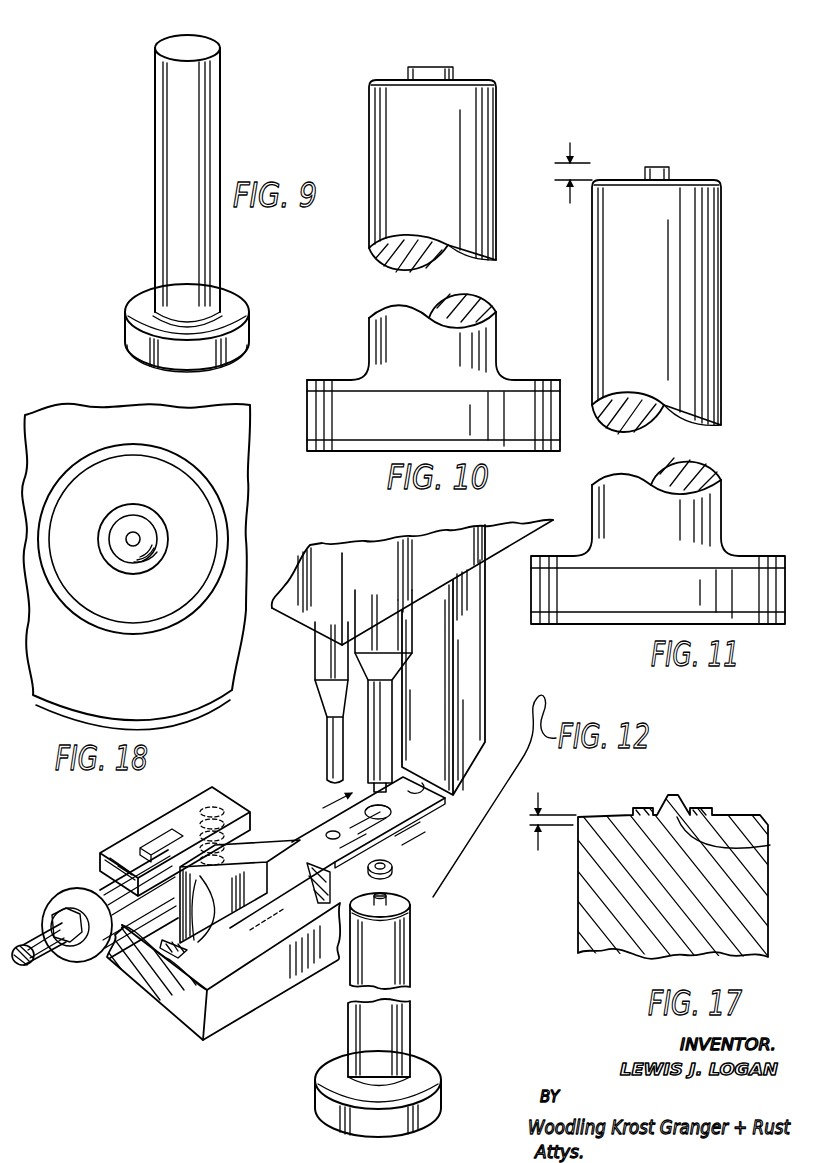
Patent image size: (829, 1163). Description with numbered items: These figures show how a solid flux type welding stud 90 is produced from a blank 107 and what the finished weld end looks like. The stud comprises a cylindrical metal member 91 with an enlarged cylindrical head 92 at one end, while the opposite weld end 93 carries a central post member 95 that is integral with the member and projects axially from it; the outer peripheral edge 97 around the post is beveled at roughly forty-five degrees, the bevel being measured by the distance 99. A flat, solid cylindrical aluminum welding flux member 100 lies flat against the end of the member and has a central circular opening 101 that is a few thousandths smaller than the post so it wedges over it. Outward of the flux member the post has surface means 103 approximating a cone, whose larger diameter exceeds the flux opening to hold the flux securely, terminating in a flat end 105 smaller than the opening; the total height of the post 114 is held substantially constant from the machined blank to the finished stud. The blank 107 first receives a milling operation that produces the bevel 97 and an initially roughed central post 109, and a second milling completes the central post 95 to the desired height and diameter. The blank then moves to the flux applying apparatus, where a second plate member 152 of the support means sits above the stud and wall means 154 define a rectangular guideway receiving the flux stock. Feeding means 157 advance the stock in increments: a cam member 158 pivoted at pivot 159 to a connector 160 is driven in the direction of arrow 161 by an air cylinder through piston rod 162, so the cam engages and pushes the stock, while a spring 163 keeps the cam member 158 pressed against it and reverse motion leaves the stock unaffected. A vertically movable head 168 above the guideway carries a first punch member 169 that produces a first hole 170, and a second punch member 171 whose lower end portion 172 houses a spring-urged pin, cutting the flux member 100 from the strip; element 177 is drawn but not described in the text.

In FIG. 17, the solid flux type welding stud 90 is at (602, 879).
In FIG. 17, the cylindrical metal member 91 is at (578, 862).
In FIG. 11, the enlarged cylindrical head 92 is at (608, 606).
In FIG. 17, the weld end 93 is at (748, 815).
In FIG. 11, the central post member 95 is at (669, 170).
In FIG. 12, the central post member 95 is at (390, 898).
In FIG. 17, the central post member 95 is at (770, 845).
In FIG. 10, the outer peripheral edge bevel 97 is at (375, 82).
In FIG. 11, the outer peripheral edge bevel 97 is at (722, 185).
In FIG. 18, the outer peripheral edge bevel 97 is at (128, 632).
In FIG. 12, the outer peripheral edge bevel 97 is at (410, 920).
In FIG. 17, the outer peripheral edge bevel 97 is at (584, 815).
In FIG. 17, the bevel dimension 99 is at (540, 820).
In FIG. 18, the welding flux member 100 is at (125, 504).
In FIG. 12, the welding flux member 100 is at (392, 870).
In FIG. 17, the welding flux member 100 is at (642, 807).
In FIG. 17, the central circular opening 101 is at (658, 805).
In FIG. 18, the surface means 103 is at (146, 532).
In FIG. 17, the surface means 103 is at (698, 808).
In FIG. 18, the flat end 105 is at (126, 537).
In FIG. 17, the flat end 105 is at (670, 797).
In FIG. 9, the blank 107 is at (172, 173).
In FIG. 10, the blank 107 is at (381, 152).
In FIG. 11, the blank 107 is at (700, 380).
In FIG. 12, the blank 107 is at (407, 1038).
In FIG. 10, the initially roughed central post 109 is at (440, 68).
In FIG. 11, the total height of the central post 114 is at (563, 172).
In FIG. 12, the second plate member 152 is at (248, 1010).
In FIG. 12, the wall means (guideway) 154 is at (240, 891).
In FIG. 12, the feeding means 157 is at (126, 826).
In FIG. 12, the cam member 158 is at (213, 920).
In FIG. 12, the pivot 159 is at (184, 952).
In FIG. 12, the connector 160 is at (97, 966).
In FIG. 12, the arrow (direction of drive) 161 is at (326, 800).
In FIG. 12, the piston rod 162 is at (44, 964).
In FIG. 12, the spring 163 is at (200, 828).
In FIG. 12, the vertically movable head 168 is at (310, 550).
In FIG. 12, the first punch member 169 is at (317, 648).
In FIG. 12, the first hole 170 is at (333, 834).
In FIG. 12, the second punch member 171 is at (382, 630).
In FIG. 12, the lower end portion of second punch 172 is at (372, 727).
In FIG. 12, the guide block 177 is at (474, 678).